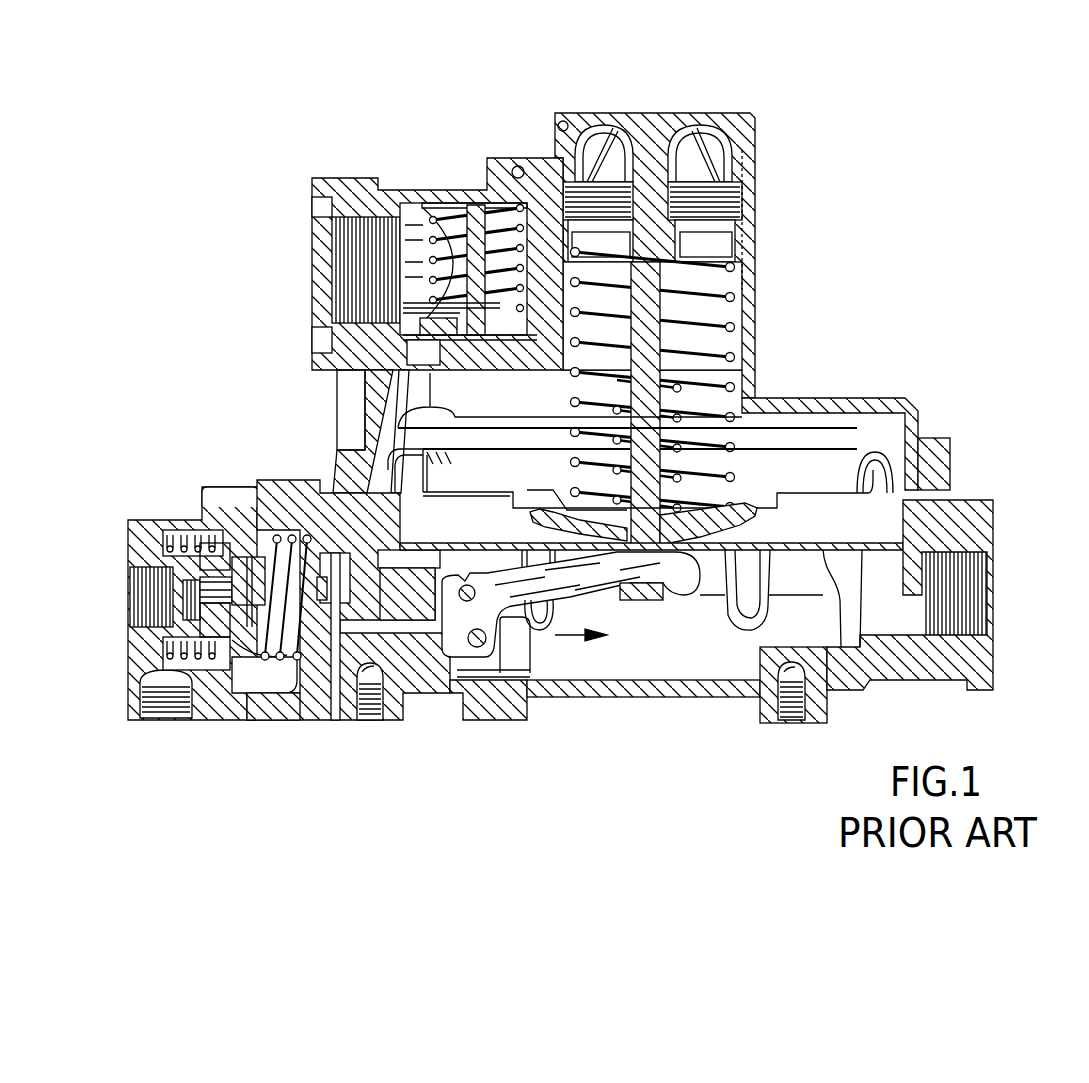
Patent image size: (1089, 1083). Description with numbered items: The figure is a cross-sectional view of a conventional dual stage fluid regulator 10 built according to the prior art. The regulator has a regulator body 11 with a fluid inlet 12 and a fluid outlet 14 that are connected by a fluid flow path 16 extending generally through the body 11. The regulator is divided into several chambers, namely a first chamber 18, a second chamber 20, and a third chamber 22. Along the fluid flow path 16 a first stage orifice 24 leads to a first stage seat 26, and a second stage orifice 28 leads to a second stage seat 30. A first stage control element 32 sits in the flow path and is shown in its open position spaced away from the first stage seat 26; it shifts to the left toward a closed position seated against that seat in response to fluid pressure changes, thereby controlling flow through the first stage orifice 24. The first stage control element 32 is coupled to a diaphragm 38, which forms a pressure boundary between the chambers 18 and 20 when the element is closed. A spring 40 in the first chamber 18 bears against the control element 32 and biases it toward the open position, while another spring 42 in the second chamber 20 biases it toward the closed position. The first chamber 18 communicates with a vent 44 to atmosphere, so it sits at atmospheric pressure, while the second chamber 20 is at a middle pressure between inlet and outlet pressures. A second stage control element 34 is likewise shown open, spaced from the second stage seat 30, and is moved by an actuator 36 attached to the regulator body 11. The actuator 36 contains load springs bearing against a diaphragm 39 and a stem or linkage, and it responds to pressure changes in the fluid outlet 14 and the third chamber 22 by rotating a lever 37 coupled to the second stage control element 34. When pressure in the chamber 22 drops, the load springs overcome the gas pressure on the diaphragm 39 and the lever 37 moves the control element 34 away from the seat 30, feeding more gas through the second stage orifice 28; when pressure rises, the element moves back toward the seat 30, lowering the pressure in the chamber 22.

The dual stage fluid regulator 10 is at (822, 265).
The regulator body 11 is at (500, 715).
The fluid inlet 12 is at (128, 597).
The fluid outlet 14 is at (995, 600).
The fluid flow path 16 is at (568, 637).
The first chamber 18 is at (222, 522).
The second chamber 20 is at (242, 578).
The third chamber 22 is at (668, 640).
The first stage orifice 24 is at (258, 558).
The first stage seat 26 is at (268, 562).
The second stage orifice 28 is at (340, 700).
The second stage seat 30 is at (380, 672).
The first stage control element 32 is at (287, 707).
The second stage control element 34 is at (415, 640).
The actuator 36 is at (740, 442).
The lever 37 is at (617, 567).
The diaphragm 38 is at (233, 545).
The diaphragm of the actuator 39 is at (840, 478).
The spring 40 is at (192, 533).
The spring 42 is at (300, 525).
The vent 44 is at (166, 706).